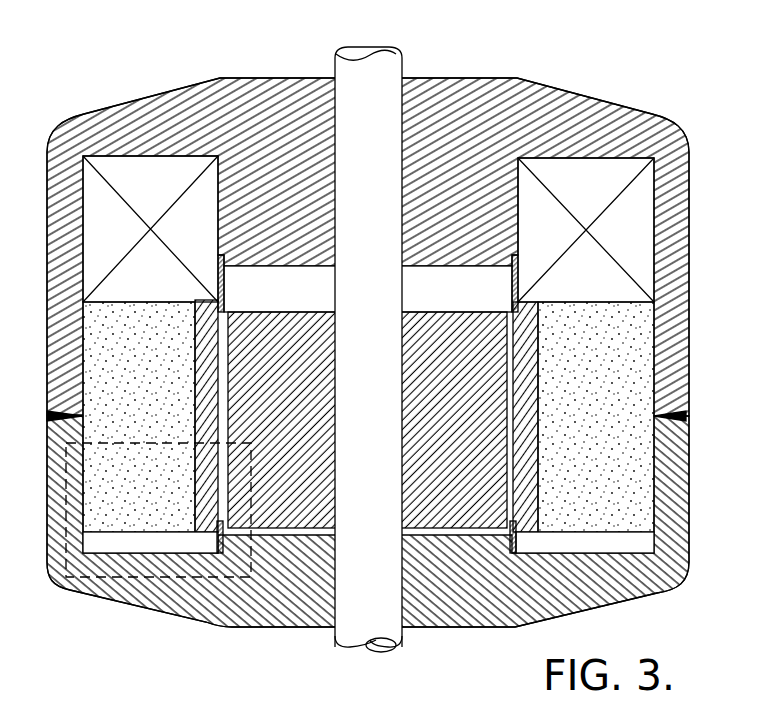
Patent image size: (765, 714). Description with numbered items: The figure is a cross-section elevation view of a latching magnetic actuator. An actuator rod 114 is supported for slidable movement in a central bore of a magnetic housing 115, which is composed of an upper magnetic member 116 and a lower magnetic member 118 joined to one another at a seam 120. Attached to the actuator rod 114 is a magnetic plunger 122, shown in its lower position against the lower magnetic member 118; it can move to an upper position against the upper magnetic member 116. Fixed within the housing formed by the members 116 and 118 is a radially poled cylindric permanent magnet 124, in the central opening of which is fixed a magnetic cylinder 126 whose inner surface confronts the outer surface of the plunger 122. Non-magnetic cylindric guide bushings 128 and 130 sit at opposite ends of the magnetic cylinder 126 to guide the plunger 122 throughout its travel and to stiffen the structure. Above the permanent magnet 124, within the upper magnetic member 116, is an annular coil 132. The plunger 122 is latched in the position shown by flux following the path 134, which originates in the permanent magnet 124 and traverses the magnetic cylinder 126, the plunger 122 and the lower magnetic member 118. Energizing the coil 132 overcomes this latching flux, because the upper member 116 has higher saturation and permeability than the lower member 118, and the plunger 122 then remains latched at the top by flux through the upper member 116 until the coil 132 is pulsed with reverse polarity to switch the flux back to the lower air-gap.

The actuator rod 114 is at (394, 73).
The magnetic housing 115 is at (689, 306).
The upper magnetic member 116 is at (595, 117).
The lower magnetic member 118 is at (680, 540).
The seam 120 is at (690, 416).
The magnetic plunger 122 is at (454, 447).
The permanent magnet 124 is at (605, 464).
The magnetic cylinder 126 is at (521, 408).
The guide bushing 128 is at (517, 543).
The guide bushing 130 is at (518, 268).
The coil 132 is at (583, 194).
The flux path 134 is at (252, 483).